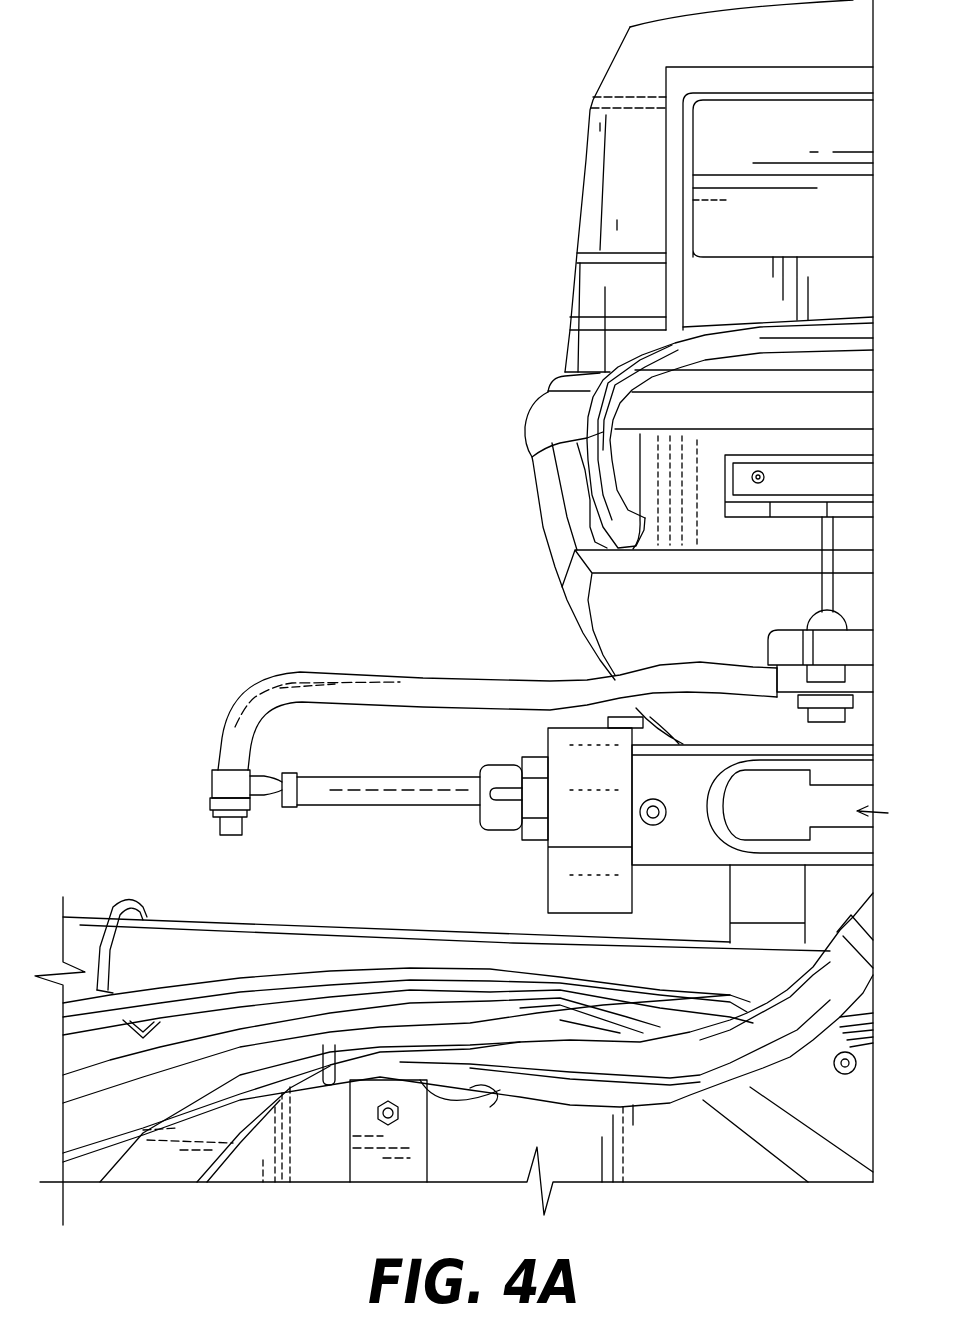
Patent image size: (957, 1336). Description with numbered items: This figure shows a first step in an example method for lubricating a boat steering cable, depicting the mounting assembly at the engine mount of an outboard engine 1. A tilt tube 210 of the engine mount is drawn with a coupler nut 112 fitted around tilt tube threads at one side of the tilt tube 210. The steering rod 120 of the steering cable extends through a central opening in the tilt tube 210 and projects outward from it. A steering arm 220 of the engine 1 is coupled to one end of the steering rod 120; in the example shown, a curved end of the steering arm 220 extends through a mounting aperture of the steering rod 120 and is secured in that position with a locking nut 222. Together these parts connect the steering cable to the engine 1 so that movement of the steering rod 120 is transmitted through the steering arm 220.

The outboard engine 1 is at (600, 143).
The coupler nut 112 is at (500, 822).
The steering rod 120 is at (417, 801).
The tilt tube 210 is at (662, 848).
The steering arm 220 is at (445, 686).
The locking nut 222 is at (245, 817).